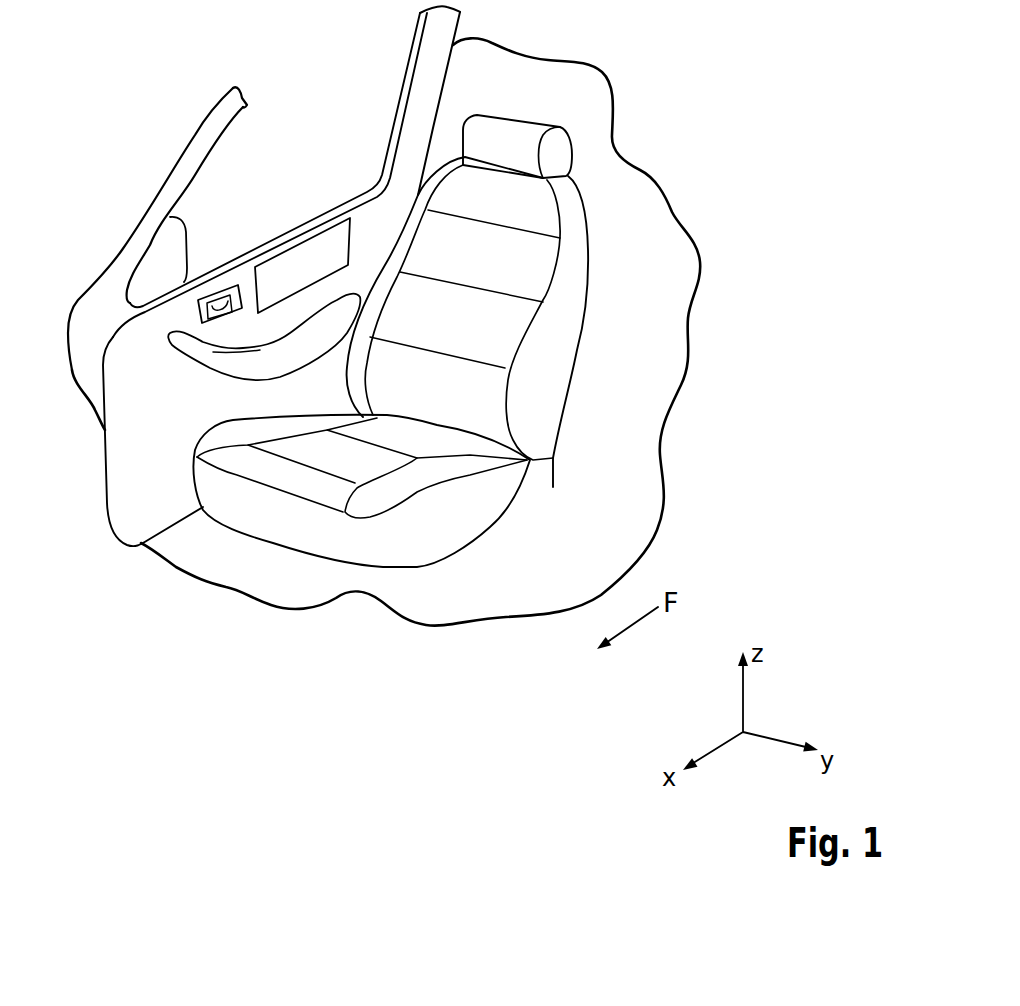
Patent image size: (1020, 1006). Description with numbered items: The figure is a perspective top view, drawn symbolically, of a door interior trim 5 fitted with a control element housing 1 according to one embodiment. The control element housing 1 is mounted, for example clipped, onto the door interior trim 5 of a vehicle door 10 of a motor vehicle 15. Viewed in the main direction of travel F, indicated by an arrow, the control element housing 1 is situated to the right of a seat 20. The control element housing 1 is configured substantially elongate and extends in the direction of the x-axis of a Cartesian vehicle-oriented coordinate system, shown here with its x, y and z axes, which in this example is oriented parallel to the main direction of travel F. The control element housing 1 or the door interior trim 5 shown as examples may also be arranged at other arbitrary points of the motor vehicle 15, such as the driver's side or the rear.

The control element housing 1 is at (305, 266).
The door interior trim 5 is at (134, 495).
The vehicle door 10 is at (150, 220).
The motor vehicle 15 is at (535, 105).
The seat 20 is at (327, 530).